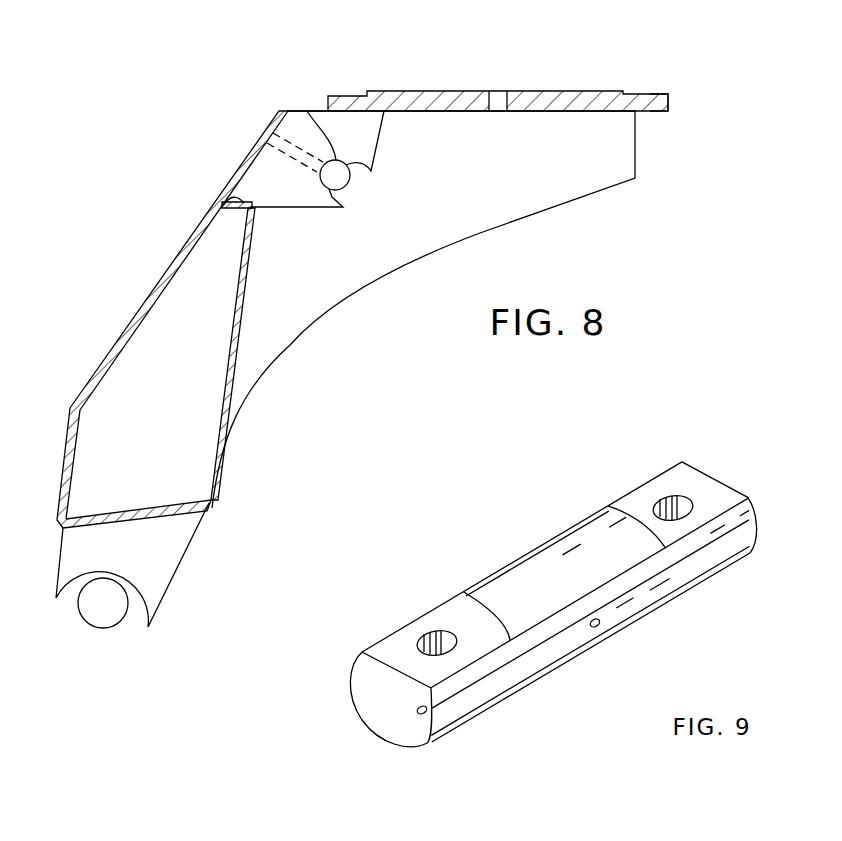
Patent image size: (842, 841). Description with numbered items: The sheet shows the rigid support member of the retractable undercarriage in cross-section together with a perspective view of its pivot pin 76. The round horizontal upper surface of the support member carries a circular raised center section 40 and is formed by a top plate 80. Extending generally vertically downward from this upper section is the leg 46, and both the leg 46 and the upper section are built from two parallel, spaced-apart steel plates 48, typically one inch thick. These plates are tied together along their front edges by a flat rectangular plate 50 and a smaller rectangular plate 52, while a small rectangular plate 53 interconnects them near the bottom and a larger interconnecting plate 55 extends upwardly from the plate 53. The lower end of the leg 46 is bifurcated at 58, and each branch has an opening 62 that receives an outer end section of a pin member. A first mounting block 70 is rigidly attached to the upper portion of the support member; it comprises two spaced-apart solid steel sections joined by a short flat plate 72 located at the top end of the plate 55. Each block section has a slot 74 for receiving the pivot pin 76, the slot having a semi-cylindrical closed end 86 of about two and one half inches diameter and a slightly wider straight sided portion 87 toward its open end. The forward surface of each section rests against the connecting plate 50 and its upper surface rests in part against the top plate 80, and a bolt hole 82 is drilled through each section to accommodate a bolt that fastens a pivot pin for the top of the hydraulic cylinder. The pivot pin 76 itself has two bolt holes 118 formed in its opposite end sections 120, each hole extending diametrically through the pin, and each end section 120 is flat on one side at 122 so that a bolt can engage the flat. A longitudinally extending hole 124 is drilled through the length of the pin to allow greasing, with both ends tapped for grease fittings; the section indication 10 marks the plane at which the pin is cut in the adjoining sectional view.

In FIG. 8, the circular raised center section 40 is at (557, 90).
In FIG. 8, the leg 46 is at (307, 330).
In FIG. 8, the steel plates 48 is at (512, 193).
In FIG. 8, the flat rectangular plate 50 is at (143, 300).
In FIG. 8, the smaller rectangular plate 52 is at (62, 455).
In FIG. 8, the small rectangular plate 53 is at (147, 520).
In FIG. 8, the larger interconnecting plate 55 is at (232, 380).
In FIG. 8, the bifurcated lower end 58 is at (190, 525).
In FIG. 8, the opening 62 is at (103, 612).
In FIG. 8, the first mounting block 70 is at (268, 170).
In FIG. 8, the short flat plate 72 is at (220, 186).
In FIG. 8, the slot 74 is at (322, 186).
In FIG. 9, the pivot pin 76 is at (498, 540).
In FIG. 8, the top plate 80 is at (670, 100).
In FIG. 8, the bolt hole 82 is at (287, 110).
In FIG. 8, the semi-cylindrical closed end 86 is at (300, 138).
In FIG. 8, the straight sided portion 87 is at (355, 165).
In FIG. 9, the section line 10 is at (743, 492).
In FIG. 9, the bolt holes 118 is at (437, 640).
In FIG. 9, the end sections 120 is at (733, 550).
In FIG. 9, the flat side 122 is at (392, 652).
In FIG. 9, the longitudinally extending hole 124 is at (421, 713).